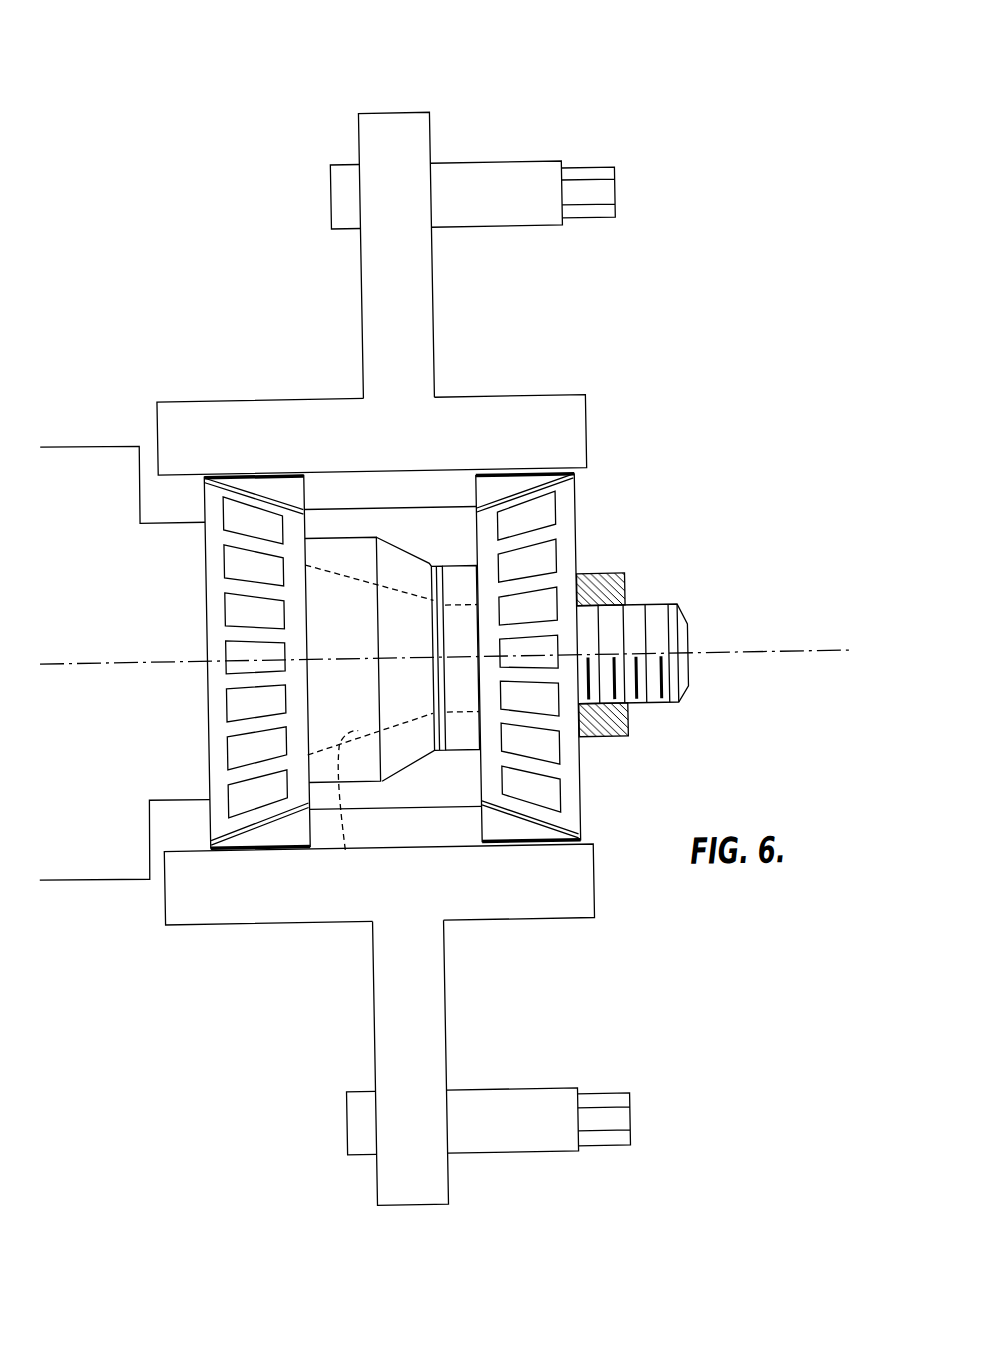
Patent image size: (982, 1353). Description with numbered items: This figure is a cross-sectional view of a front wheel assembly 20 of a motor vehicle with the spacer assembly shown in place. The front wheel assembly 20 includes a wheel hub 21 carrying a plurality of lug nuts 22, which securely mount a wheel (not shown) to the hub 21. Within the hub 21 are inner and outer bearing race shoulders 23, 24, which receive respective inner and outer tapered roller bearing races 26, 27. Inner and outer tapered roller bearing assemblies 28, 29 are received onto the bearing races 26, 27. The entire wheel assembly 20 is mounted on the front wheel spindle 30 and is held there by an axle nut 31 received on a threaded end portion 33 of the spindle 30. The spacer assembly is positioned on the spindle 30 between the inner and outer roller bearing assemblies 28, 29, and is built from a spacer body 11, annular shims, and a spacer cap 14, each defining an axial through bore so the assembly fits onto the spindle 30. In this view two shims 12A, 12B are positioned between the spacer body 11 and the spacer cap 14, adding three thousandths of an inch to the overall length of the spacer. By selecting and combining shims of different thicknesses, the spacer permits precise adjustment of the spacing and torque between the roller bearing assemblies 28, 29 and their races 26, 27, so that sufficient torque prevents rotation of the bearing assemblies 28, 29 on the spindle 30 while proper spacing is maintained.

The front wheel assembly 20 is at (443, 618).
The wheel hub 21 is at (407, 129).
The lug nuts 22 is at (541, 192).
The inner bearing race shoulder 23 is at (270, 476).
The outer bearing race shoulder 24 is at (523, 488).
The inner tapered roller bearing race 26 is at (221, 468).
The outer tapered roller bearing race 27 is at (563, 487).
The inner tapered roller bearing assembly 28 is at (219, 506).
The outer tapered roller bearing assembly 29 is at (564, 532).
The spacer body 11 is at (350, 548).
The annular shim 12A is at (420, 561).
The annular shim 12B is at (449, 537).
The spacer cap 14 is at (469, 597).
The front wheel spindle 30 is at (337, 818).
The axle nut 31 is at (624, 578).
The threaded end portion 33 is at (683, 679).